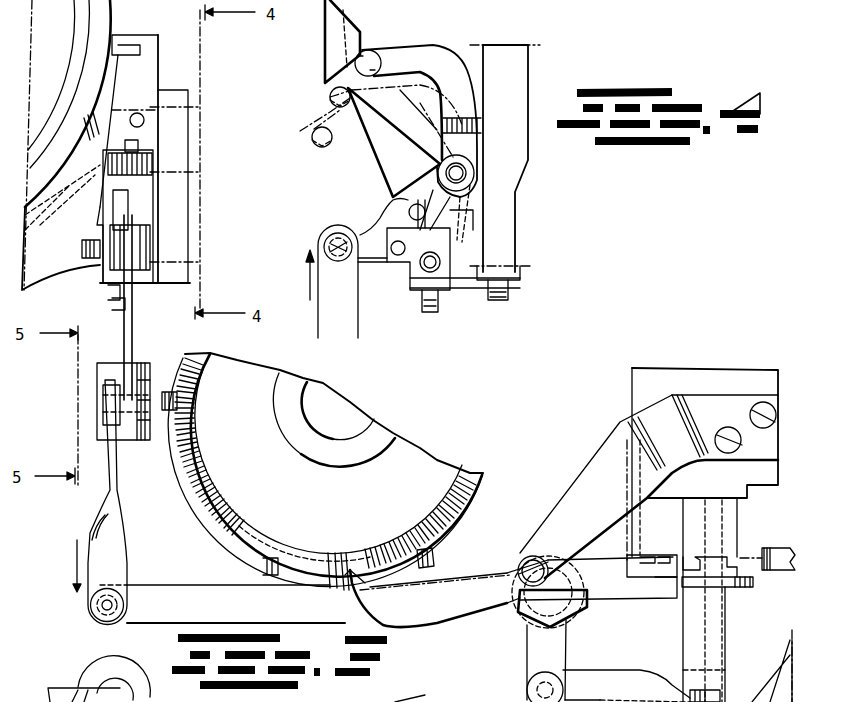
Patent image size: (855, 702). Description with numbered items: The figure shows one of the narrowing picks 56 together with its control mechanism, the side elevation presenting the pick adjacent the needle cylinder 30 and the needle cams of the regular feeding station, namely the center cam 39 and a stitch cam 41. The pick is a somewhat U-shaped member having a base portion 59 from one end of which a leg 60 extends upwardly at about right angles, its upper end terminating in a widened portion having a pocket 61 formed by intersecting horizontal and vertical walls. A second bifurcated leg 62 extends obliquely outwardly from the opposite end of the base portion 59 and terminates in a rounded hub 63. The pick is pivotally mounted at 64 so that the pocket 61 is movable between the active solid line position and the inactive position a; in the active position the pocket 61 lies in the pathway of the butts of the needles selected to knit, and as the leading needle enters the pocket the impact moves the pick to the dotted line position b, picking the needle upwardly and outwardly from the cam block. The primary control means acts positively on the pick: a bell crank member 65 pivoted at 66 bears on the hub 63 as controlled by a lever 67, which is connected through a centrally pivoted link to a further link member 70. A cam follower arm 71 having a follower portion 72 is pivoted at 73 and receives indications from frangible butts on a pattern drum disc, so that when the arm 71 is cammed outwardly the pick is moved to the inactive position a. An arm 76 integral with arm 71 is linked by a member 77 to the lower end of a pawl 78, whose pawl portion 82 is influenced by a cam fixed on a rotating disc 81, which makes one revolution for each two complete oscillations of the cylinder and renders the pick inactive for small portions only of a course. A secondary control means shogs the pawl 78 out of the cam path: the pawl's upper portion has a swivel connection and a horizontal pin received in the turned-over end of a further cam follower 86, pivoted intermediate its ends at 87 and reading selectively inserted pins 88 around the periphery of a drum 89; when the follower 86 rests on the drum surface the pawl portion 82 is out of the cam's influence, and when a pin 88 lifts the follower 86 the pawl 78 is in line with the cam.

In FIG. 3, the needle cylinder 30 is at (66, 86).
In FIG. 4, the center cam 39 is at (326, 40).
In FIG. 4, the stitch cam 41 is at (381, 141).
In FIG. 3, the stitch cam 41 is at (78, 222).
In FIG. 3, the narrowing pick 56 is at (162, 68).
In FIG. 4, the base portion 59 is at (460, 85).
In FIG. 4, the leg 60 is at (403, 46).
In FIG. 4, the pocket 61 is at (373, 55).
In FIG. 3, the pocket 61 is at (123, 40).
In FIG. 4, the bifurcated leg 62 is at (432, 205).
In FIG. 4, the hub 63 is at (412, 212).
In FIG. 4, the pivot 64 is at (462, 173).
In FIG. 4, the bell crank member 65 is at (362, 232).
In FIG. 4, the pivot 66 is at (397, 255).
In FIG. 4, the lever 67 is at (325, 326).
In FIG. 3, the lever 67 is at (126, 320).
In FIG. 3, the link member 70 is at (122, 541).
In FIG. 3, the cam follower arm 71 is at (158, 597).
In FIG. 3, the follower portion 72 is at (333, 568).
In FIG. 3, the pivot 73 is at (546, 608).
In FIG. 3, the arm 76 is at (557, 657).
In FIG. 3, the member 77 is at (615, 678).
In FIG. 3, the pawl 78 is at (710, 585).
In FIG. 3, the rotating disc 81 is at (780, 557).
In FIG. 3, the pawl portion 82 is at (750, 581).
In FIG. 3, the cam follower 86 is at (470, 582).
In FIG. 3, the pivot 87 is at (540, 570).
In FIG. 3, the pins 88 is at (430, 560).
In FIG. 3, the drum 89 is at (410, 701).
In FIG. 4, the inactive position a is at (330, 94).
In FIG. 4, the dotted line position b is at (314, 137).